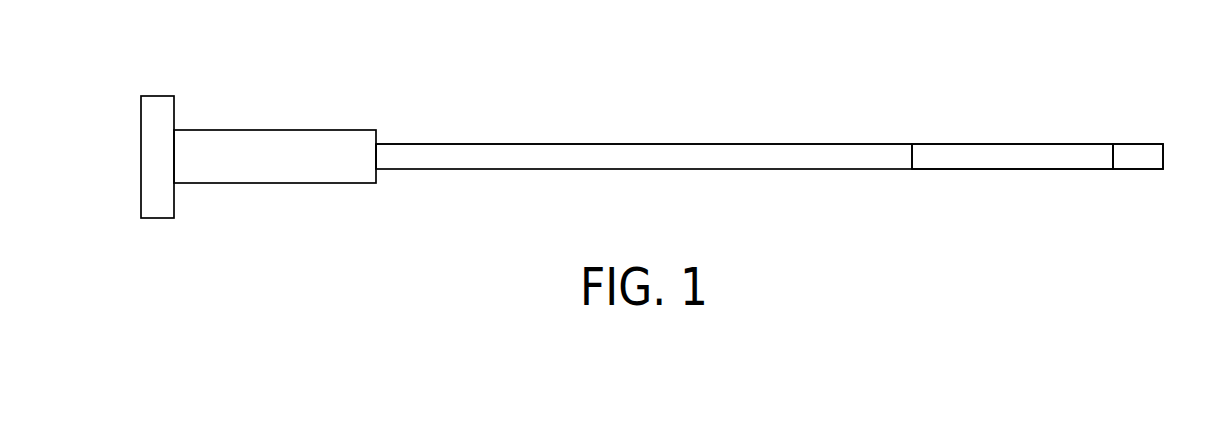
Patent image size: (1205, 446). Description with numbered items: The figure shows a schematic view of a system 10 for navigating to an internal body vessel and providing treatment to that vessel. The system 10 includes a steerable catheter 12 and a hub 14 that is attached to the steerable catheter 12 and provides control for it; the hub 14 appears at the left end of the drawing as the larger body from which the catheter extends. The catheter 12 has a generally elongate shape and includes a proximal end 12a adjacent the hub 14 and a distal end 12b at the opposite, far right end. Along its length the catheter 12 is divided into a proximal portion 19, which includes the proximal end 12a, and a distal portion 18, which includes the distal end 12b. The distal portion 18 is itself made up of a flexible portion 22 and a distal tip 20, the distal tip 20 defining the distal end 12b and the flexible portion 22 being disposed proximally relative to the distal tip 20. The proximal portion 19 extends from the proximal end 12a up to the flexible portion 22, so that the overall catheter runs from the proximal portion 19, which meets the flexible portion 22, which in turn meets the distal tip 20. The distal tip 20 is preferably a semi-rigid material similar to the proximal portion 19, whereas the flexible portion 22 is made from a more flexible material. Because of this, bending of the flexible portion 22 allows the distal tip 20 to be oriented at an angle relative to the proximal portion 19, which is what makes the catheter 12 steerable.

The system 10 is at (835, 76).
The steerable catheter 12 is at (711, 144).
The proximal end 12a is at (417, 170).
The distal end 12b is at (1090, 144).
The hub 14 is at (253, 130).
The distal portion 18 is at (970, 144).
The proximal portion 19 is at (471, 144).
The distal tip 20 is at (1140, 170).
The flexible portion 22 is at (1015, 170).